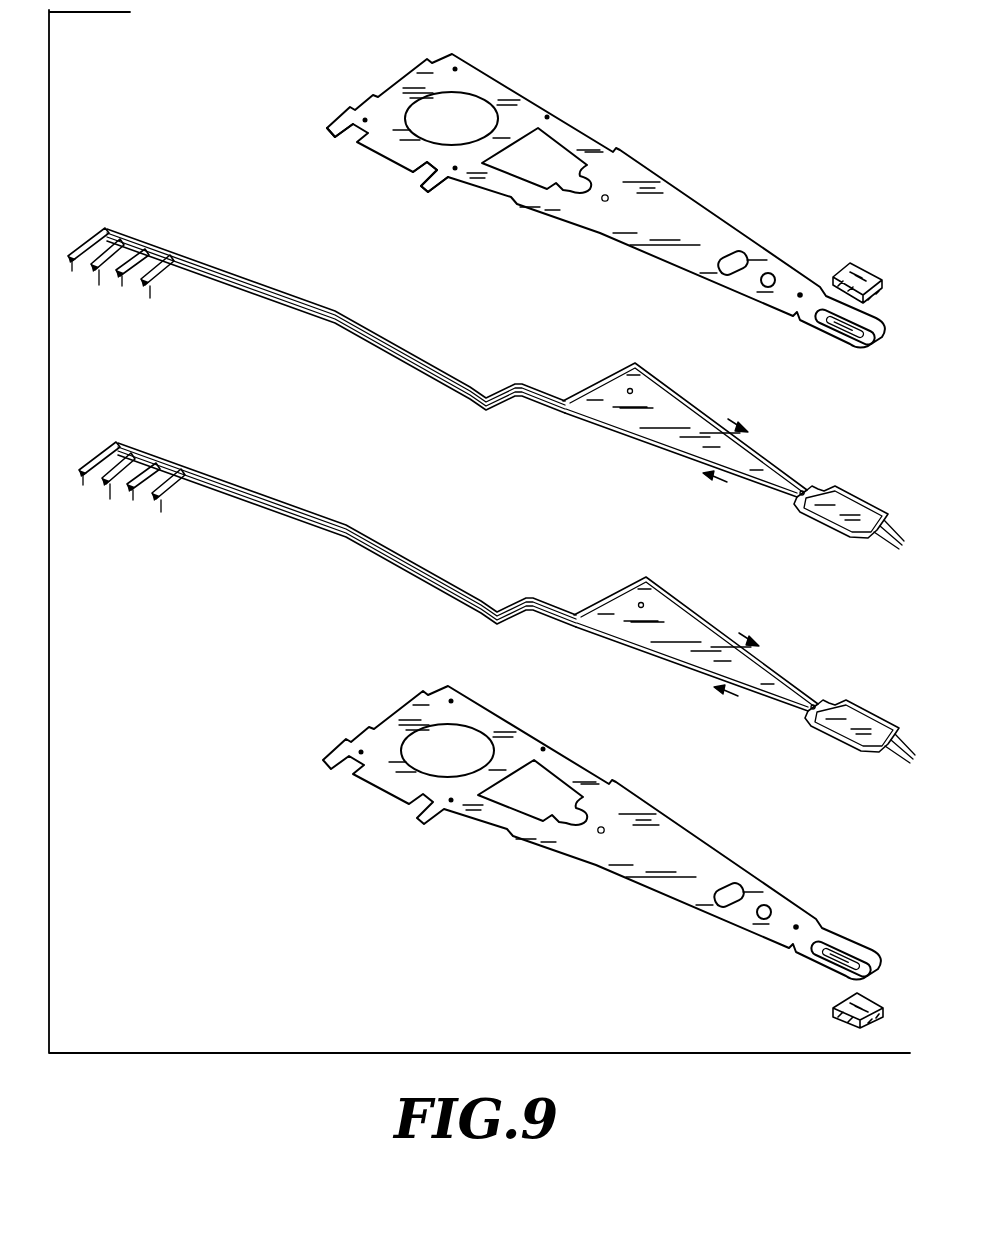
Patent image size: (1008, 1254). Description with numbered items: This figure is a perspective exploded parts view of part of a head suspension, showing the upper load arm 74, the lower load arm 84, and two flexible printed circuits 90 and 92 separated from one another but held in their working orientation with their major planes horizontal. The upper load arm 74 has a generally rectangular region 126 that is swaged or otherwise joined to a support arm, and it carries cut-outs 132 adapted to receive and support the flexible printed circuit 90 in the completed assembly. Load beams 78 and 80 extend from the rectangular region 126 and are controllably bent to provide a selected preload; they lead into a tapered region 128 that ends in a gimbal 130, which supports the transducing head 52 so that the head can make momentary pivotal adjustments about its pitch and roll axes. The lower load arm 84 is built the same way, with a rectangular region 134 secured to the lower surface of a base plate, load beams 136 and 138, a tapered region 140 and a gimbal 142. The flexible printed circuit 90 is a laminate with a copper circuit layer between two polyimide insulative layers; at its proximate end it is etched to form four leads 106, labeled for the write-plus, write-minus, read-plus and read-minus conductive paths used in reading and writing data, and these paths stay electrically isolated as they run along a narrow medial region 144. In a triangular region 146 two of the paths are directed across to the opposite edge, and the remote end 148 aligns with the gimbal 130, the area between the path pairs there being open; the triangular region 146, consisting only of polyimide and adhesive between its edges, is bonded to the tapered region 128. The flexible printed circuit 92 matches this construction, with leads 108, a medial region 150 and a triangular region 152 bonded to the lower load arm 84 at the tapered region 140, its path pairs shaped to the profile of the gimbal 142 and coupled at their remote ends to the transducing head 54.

The transducing head 52 is at (860, 270).
The transducing head 54 is at (838, 1002).
The upper load arm 74 is at (403, 73).
The load beam 78 is at (573, 138).
The load beam 80 is at (503, 183).
The lower load arm 84 is at (372, 807).
The flexible printed circuit 90 is at (372, 357).
The flexible printed circuit 92 is at (378, 522).
The leads 106 is at (163, 272).
The leads 108 is at (174, 486).
The rectangular region 126 is at (473, 80).
The tapered region 128 is at (672, 208).
The gimbal 130 is at (840, 320).
The cut-outs 132 is at (350, 133).
The rectangular region 134 is at (402, 723).
The load beam 136 is at (568, 770).
The load beam 138 is at (482, 813).
The tapered region 140 is at (683, 842).
The gimbal 142 is at (838, 952).
The medial region 144 is at (408, 353).
The triangular region 146 is at (667, 412).
The remote end 148 is at (843, 491).
The medial region 150 is at (405, 555).
The triangular region 152 is at (663, 608).